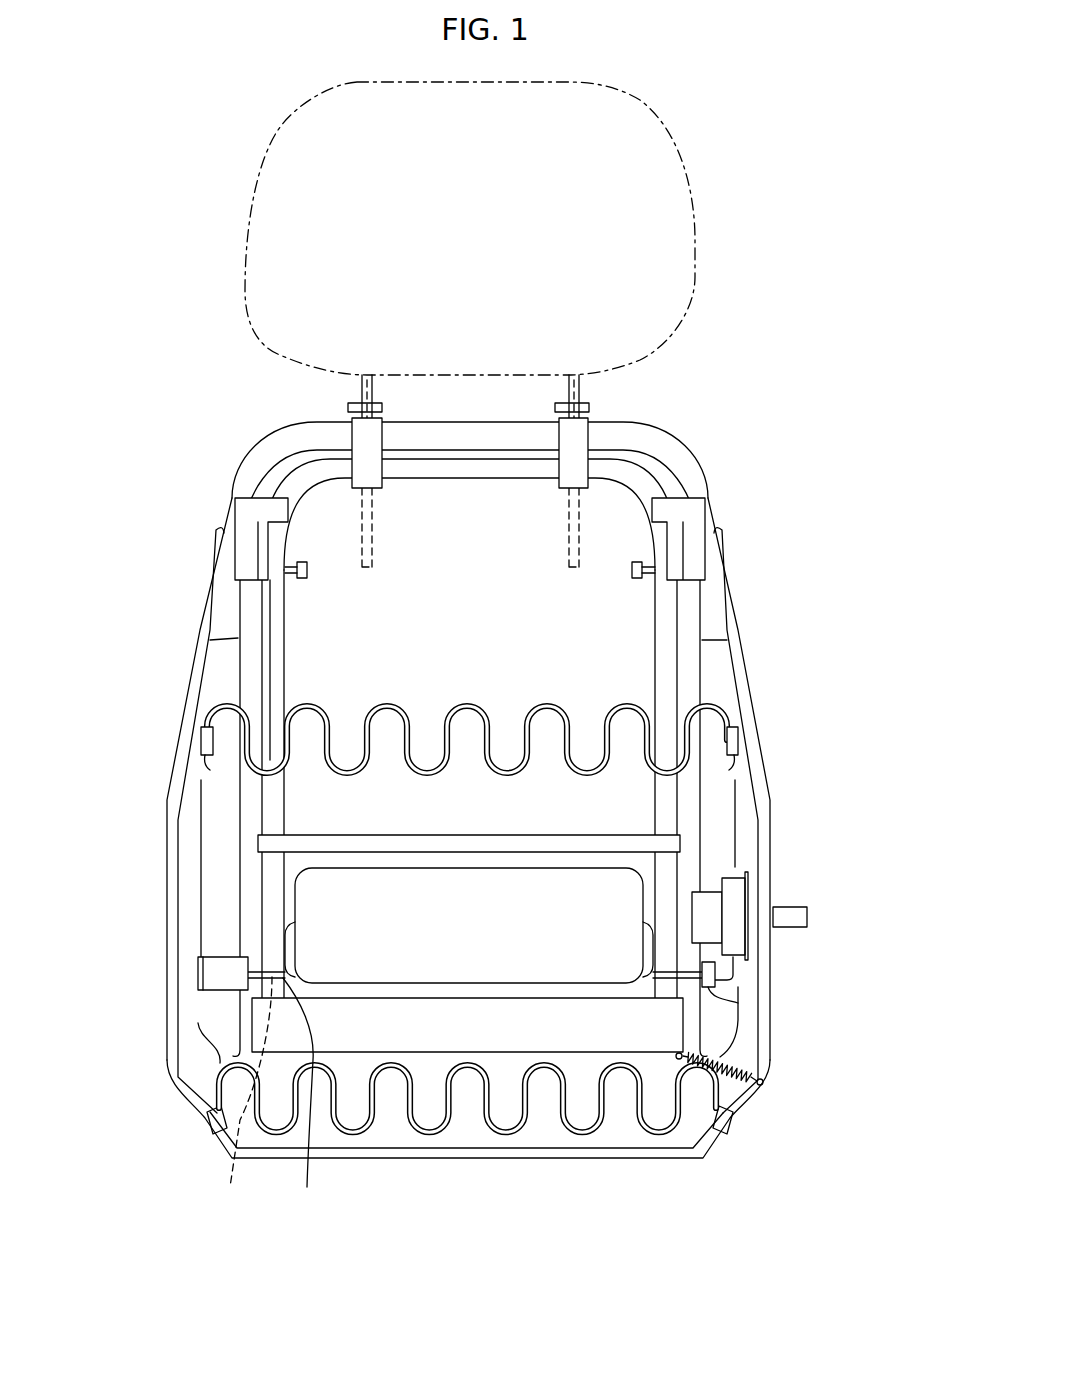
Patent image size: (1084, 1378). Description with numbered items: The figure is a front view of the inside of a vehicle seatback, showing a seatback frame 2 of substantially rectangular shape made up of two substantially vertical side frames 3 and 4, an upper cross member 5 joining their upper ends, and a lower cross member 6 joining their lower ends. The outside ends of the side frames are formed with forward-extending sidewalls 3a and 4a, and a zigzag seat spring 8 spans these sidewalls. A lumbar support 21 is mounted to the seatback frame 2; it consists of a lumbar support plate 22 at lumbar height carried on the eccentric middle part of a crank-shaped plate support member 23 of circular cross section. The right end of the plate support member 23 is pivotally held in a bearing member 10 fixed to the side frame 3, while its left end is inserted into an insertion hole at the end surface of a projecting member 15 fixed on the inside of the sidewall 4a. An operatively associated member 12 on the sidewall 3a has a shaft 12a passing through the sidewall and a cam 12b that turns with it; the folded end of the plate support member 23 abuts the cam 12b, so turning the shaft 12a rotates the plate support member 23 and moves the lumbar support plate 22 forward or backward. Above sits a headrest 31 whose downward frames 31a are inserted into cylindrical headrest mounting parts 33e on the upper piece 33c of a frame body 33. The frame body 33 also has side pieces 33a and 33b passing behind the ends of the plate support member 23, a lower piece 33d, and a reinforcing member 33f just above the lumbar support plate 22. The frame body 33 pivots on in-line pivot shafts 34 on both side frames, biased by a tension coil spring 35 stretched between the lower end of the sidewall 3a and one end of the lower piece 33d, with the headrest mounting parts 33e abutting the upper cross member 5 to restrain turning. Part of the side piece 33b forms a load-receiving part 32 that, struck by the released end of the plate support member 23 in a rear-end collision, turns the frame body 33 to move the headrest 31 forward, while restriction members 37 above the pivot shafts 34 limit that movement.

The seatback frame 2 is at (467, 811).
The side frame 3 is at (777, 805).
The sidewall 3a is at (773, 1063).
The side frame 4 is at (160, 805).
The sidewall 4a is at (167, 910).
The upper cross member 5 is at (445, 422).
The lower cross member 6 is at (498, 1158).
The seat spring 8 is at (588, 1130).
The bearing member 10 is at (712, 990).
The operatively associated member 12 is at (795, 901).
The shaft 12a is at (808, 917).
The cam 12b is at (733, 900).
The projecting member 15 is at (215, 990).
The lumbar support 21 is at (475, 880).
The lumbar support plate 22 is at (523, 890).
The plate support member 23 is at (303, 1101).
The headrest 31 is at (505, 324).
The frames 31a is at (585, 380).
The load-receiving part 32 is at (240, 1101).
The frame body 33 is at (469, 821).
The side piece 33a is at (655, 660).
The side piece 33b is at (288, 660).
The upper piece 33c is at (468, 480).
The lower piece 33d is at (393, 1052).
The headrest mounting parts 33e is at (559, 485).
The reinforcing member 33f is at (350, 835).
The pivot shafts 34 is at (632, 573).
The tension coil spring 35 is at (753, 1053).
The restriction members 37 is at (678, 497).